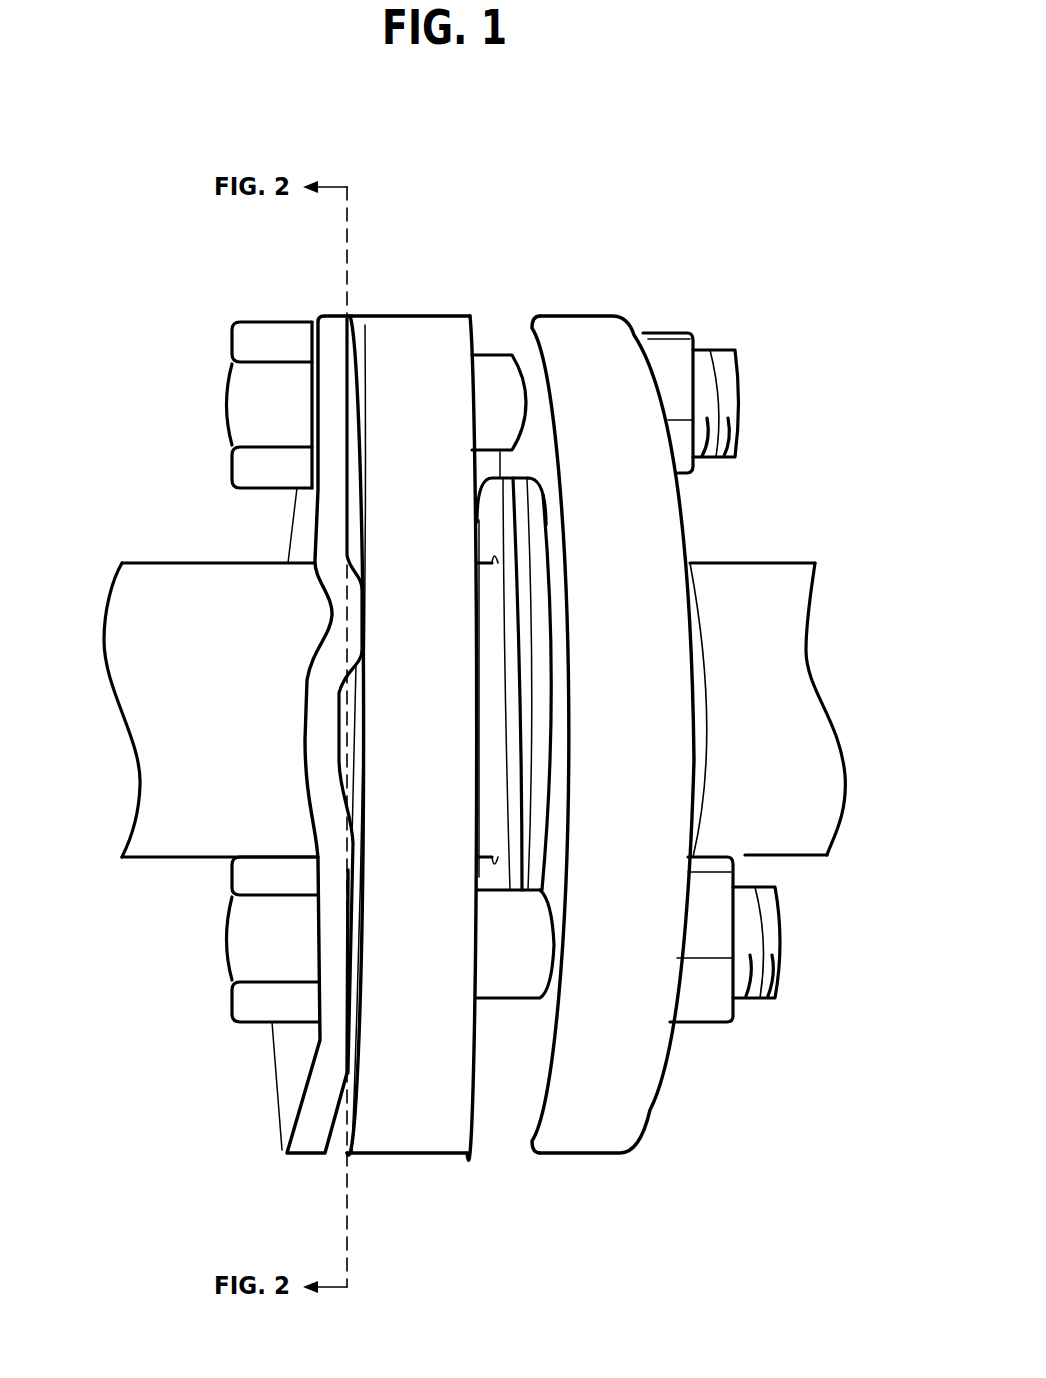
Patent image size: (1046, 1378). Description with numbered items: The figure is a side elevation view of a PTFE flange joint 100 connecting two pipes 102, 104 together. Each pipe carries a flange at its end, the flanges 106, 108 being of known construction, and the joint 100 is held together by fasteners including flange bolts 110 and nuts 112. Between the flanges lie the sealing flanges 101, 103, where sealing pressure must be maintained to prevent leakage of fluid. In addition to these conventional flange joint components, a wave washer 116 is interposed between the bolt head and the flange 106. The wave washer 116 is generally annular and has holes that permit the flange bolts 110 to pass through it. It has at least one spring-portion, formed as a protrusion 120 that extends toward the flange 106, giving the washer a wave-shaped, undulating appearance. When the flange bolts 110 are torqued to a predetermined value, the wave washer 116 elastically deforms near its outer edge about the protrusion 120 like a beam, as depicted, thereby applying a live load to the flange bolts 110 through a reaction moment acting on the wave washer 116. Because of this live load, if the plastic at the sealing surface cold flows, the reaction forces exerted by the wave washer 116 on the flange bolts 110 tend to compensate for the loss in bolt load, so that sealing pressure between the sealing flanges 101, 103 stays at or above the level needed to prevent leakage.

The PTFE flange joint 100 is at (746, 298).
The sealing flange 101 is at (533, 530).
The pipe 102 is at (167, 778).
The sealing flange 103 is at (517, 516).
The pipe 104 is at (770, 647).
The flange 106 is at (404, 338).
The flange 108 is at (587, 340).
The flange bolt 110 is at (492, 975).
The nut 112 is at (233, 373).
The wave washer 116 is at (293, 1121).
The protrusion 120 is at (317, 560).